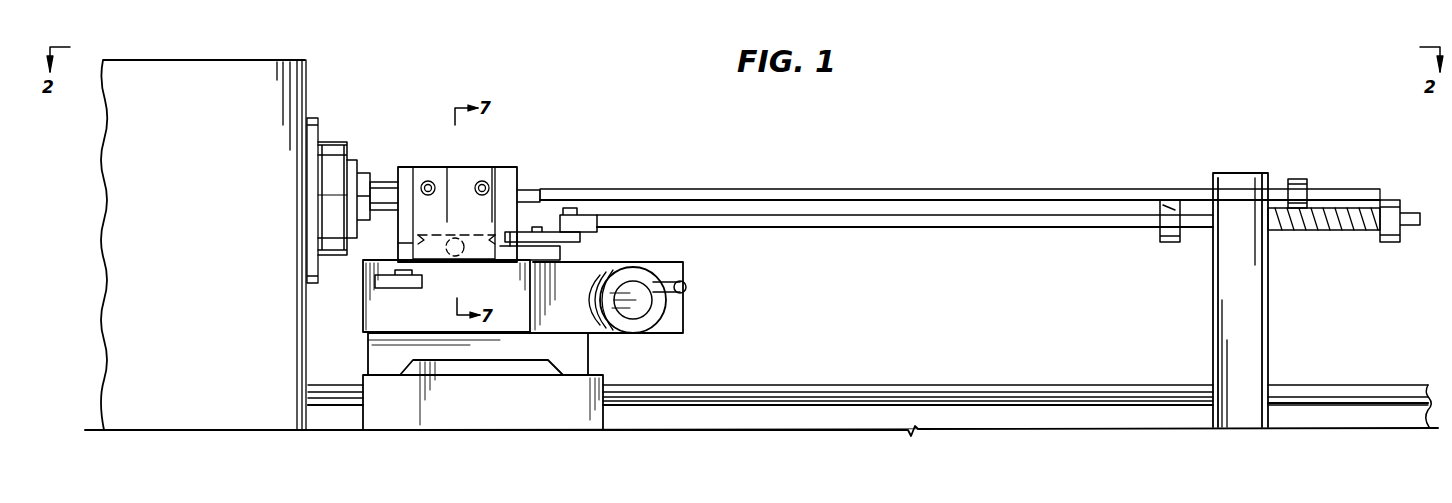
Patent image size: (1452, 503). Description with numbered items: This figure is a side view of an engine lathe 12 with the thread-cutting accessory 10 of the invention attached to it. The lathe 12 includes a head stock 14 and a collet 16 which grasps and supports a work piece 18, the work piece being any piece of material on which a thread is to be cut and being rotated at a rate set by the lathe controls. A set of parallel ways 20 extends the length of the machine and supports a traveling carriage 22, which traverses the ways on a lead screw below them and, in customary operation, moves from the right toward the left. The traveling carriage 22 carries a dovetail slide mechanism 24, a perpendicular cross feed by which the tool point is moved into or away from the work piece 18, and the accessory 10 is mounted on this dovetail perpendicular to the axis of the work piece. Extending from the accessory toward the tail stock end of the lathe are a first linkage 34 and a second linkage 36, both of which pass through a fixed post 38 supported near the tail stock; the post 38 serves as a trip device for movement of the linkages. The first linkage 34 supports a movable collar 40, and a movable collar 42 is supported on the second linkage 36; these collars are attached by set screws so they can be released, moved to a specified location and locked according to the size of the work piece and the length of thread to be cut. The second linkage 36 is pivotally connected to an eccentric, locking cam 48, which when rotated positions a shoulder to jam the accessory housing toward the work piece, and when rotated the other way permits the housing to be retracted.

The accessory 10 is at (553, 136).
The lathe 12 is at (248, 452).
The head stock 14 is at (222, 229).
The collet 16 is at (345, 142).
The work piece 18 is at (365, 172).
The parallel ways 20 is at (978, 385).
The traveling carriage 22 is at (569, 420).
The dovetail slide mechanism 24 is at (566, 368).
The first linkage 34 is at (990, 189).
The second linkage 36 is at (981, 229).
The fixed post 38 is at (1240, 173).
The movable collar 40 is at (1300, 178).
The movable collar 42 is at (1170, 243).
The locking cam 48 is at (586, 240).